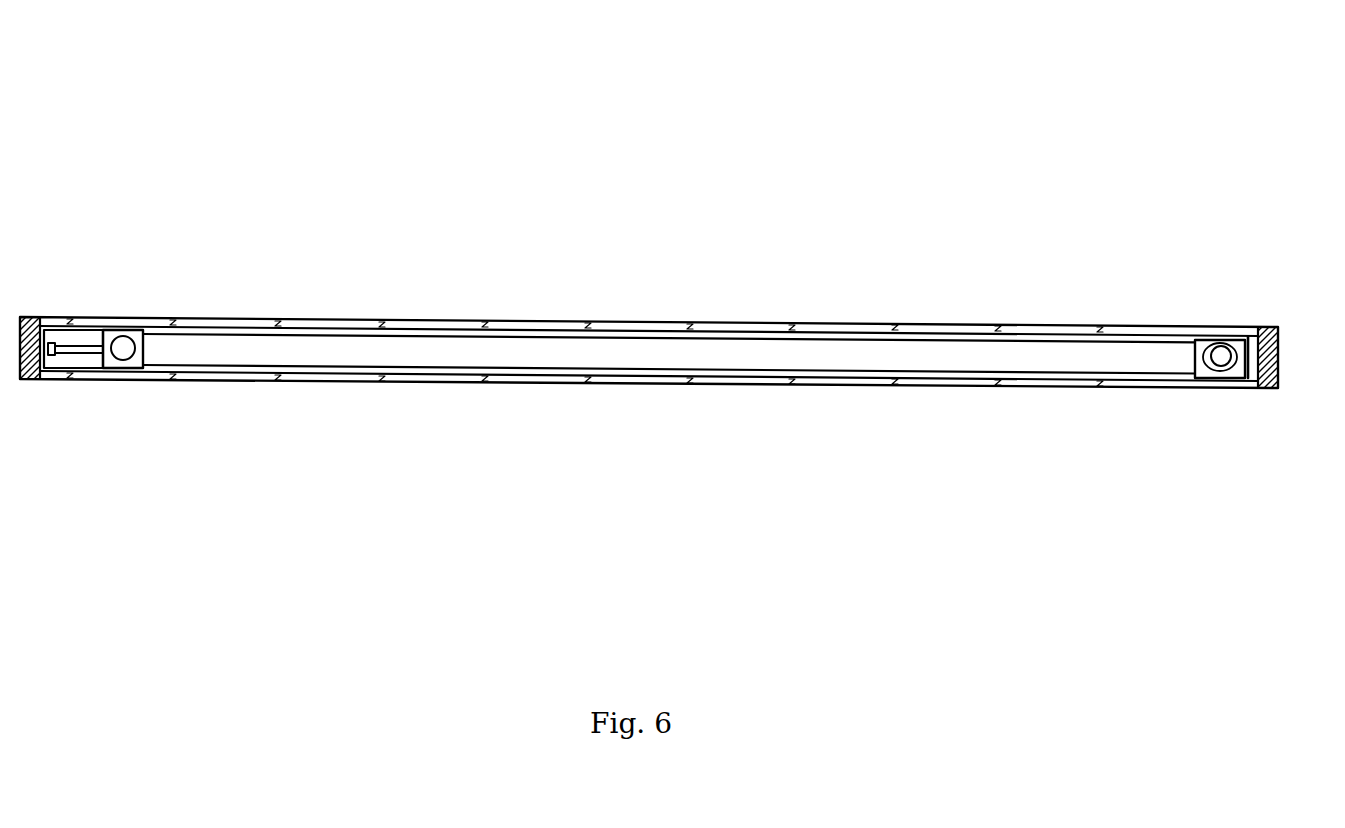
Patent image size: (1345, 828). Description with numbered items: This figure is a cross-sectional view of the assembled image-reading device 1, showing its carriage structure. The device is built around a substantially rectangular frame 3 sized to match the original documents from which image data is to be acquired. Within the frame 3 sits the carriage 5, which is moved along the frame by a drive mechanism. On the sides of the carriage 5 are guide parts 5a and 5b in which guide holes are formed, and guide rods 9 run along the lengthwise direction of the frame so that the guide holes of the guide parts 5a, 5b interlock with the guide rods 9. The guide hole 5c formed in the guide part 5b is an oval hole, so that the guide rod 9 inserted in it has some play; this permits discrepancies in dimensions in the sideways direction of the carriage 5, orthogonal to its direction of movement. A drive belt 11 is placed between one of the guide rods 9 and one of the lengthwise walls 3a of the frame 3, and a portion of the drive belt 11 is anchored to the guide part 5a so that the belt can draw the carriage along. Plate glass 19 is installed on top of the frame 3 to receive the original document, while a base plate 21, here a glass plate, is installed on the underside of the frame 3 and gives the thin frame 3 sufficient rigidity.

The image-reading device 1 is at (617, 208).
The frame 3 is at (1278, 355).
The lengthwise wall 3a is at (22, 381).
The carriage 5 is at (703, 354).
The guide part 5a is at (144, 370).
The guide part 5b is at (1240, 348).
The guide hole 5c is at (1238, 380).
The guide rod 9 is at (124, 346).
The drive belt 11 is at (57, 343).
The plate glass 19 is at (955, 333).
The base plate 21 is at (954, 384).